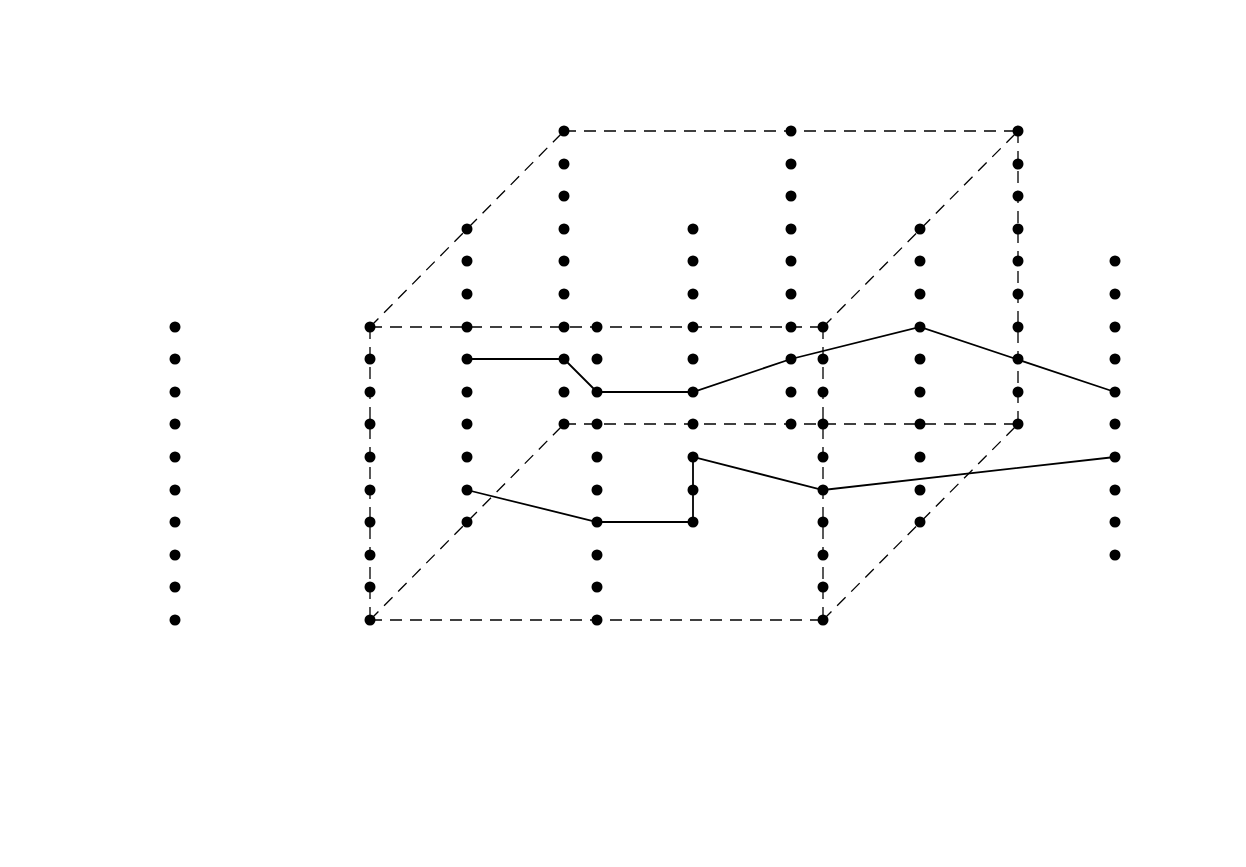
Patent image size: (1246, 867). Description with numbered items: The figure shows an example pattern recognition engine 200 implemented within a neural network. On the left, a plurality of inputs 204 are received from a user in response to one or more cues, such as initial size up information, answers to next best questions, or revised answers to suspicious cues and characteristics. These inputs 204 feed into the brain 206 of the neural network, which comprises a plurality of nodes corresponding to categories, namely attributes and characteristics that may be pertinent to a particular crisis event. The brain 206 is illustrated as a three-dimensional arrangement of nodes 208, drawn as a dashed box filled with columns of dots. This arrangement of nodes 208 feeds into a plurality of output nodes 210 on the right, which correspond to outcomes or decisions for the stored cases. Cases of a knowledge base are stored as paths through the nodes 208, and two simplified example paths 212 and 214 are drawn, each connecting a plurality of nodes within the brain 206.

The pattern recognition engine 200 is at (160, 74).
The plurality of inputs 204 is at (152, 313).
The brain 206 is at (412, 252).
The three-dimensional arrangement of nodes 208 is at (368, 419).
The plurality of output nodes 210 is at (1122, 249).
The path 212 is at (772, 364).
The path 214 is at (559, 512).